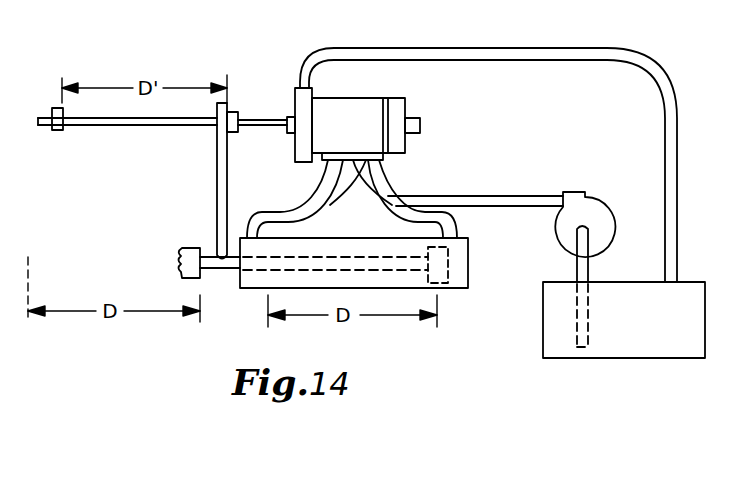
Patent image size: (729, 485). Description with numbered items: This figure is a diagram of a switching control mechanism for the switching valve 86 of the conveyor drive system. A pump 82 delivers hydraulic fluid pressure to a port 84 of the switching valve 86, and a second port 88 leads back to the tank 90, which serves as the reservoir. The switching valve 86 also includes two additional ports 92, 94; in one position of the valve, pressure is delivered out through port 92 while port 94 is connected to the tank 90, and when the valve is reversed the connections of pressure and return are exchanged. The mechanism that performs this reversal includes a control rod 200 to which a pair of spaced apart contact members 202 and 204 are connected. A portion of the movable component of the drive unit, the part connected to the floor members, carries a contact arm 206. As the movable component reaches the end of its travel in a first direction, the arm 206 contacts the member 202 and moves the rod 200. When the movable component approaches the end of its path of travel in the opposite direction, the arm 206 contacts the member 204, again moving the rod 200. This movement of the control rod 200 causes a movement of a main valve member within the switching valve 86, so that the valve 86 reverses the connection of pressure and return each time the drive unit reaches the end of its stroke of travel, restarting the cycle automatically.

The pump 82 is at (583, 193).
The port 84 is at (354, 246).
The switching valve 86 is at (339, 103).
The second port 88 is at (298, 87).
The tank 90 is at (630, 343).
The port 92 is at (327, 167).
The port 94 is at (378, 161).
The control rod 200 is at (156, 126).
The contact member 202 is at (235, 122).
The contact member 204 is at (58, 131).
The contact arm 206 is at (219, 201).